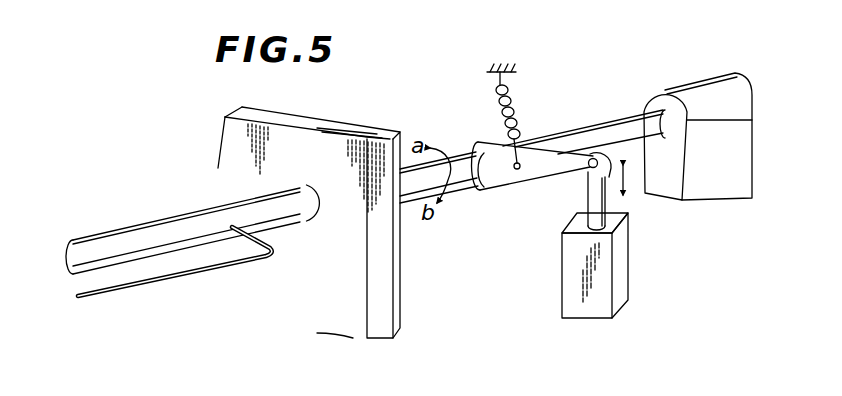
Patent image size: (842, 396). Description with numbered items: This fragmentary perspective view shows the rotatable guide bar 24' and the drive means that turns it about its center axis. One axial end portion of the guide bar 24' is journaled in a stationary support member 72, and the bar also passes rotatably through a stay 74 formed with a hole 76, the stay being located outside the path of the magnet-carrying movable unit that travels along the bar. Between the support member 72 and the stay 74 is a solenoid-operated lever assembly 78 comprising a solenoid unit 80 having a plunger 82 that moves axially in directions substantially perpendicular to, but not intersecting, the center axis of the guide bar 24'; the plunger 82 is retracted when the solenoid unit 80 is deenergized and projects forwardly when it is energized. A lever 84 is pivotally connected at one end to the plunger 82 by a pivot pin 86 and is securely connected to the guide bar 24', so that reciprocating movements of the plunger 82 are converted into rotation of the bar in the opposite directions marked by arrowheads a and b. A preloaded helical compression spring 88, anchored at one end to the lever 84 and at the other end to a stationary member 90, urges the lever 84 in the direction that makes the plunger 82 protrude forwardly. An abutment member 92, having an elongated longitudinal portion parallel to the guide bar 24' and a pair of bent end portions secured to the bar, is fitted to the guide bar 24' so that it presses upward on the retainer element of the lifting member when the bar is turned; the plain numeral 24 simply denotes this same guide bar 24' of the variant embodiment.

The guide bar 24' is at (364, 192).
The shaft 24 is at (364, 192).
The support member 72 is at (710, 86).
The stay 74 is at (400, 310).
The hole 76 is at (315, 223).
The solenoid-operated lever assembly 78 is at (548, 230).
The solenoid unit 80 is at (628, 274).
The plunger 82 is at (588, 200).
The lever 84 is at (493, 190).
The pivot pin 86 is at (596, 157).
The helical compression spring 88 is at (517, 116).
The stationary member 90 is at (492, 75).
The abutment member 92 is at (206, 272).